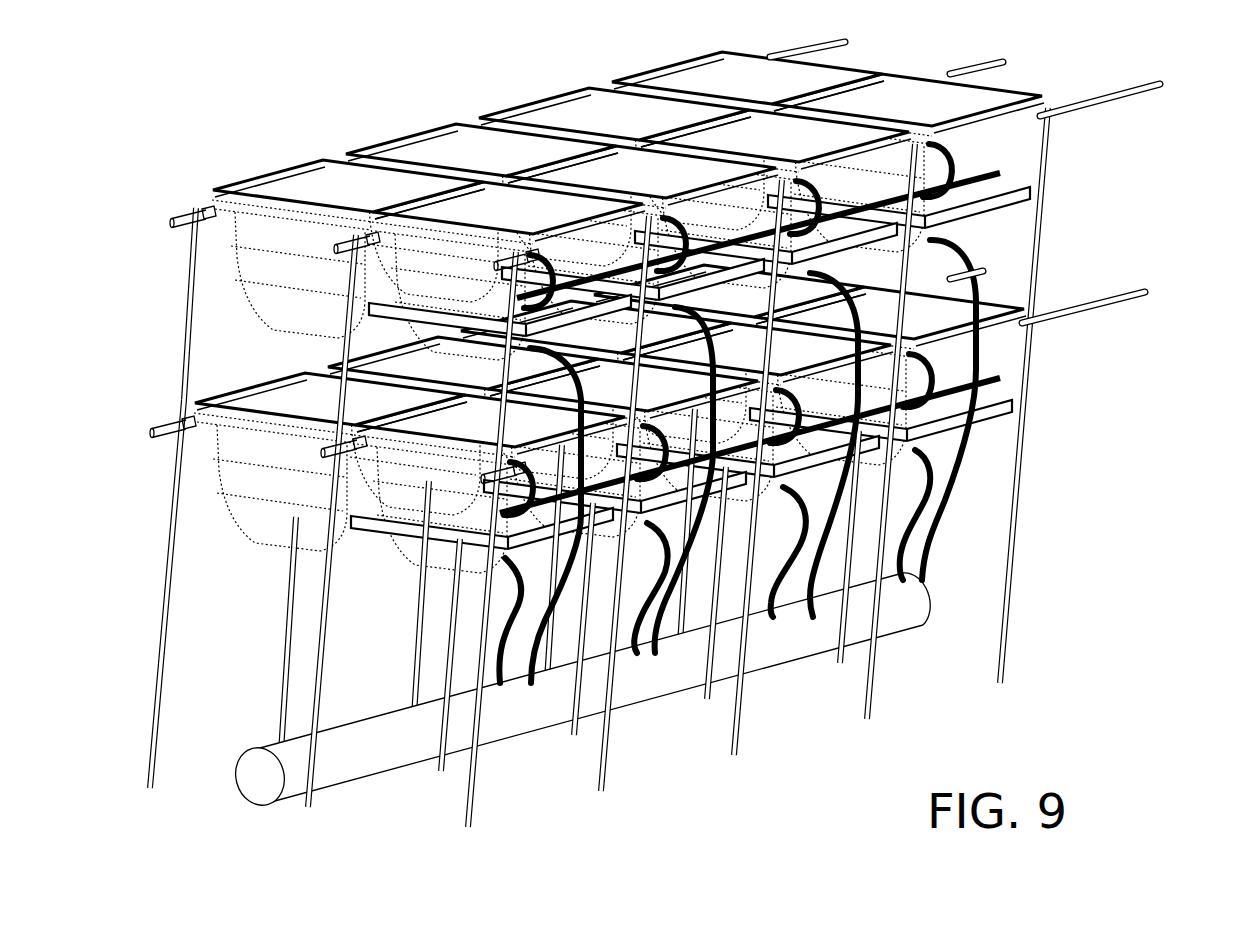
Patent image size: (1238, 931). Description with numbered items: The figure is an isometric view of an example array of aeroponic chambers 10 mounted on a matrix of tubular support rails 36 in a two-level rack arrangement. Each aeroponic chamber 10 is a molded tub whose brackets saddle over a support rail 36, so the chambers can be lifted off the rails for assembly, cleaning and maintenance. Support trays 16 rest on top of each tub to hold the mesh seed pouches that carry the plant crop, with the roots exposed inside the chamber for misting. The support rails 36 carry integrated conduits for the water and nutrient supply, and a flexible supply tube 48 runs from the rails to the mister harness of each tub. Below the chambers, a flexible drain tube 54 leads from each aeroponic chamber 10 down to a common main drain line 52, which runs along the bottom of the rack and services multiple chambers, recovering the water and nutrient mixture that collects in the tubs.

The aeroponic chamber 10 is at (986, 241).
The support tray 16 is at (993, 88).
The tubular support rail 36 is at (1102, 100).
The flexible supply tube 48 is at (1000, 187).
The main drain line 52 is at (783, 653).
The flexible drain tube 54 is at (963, 445).